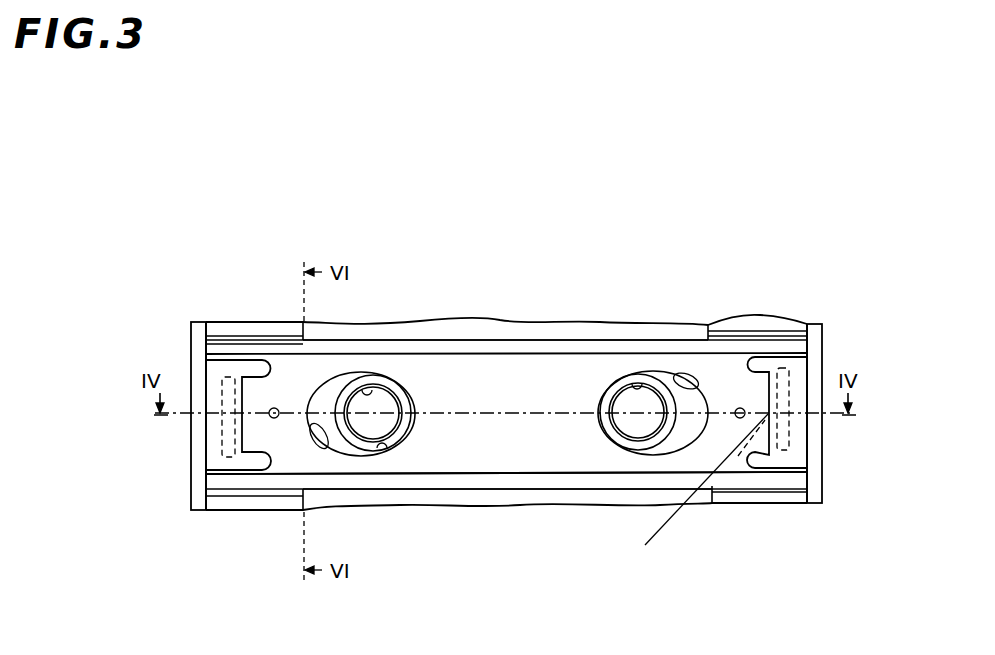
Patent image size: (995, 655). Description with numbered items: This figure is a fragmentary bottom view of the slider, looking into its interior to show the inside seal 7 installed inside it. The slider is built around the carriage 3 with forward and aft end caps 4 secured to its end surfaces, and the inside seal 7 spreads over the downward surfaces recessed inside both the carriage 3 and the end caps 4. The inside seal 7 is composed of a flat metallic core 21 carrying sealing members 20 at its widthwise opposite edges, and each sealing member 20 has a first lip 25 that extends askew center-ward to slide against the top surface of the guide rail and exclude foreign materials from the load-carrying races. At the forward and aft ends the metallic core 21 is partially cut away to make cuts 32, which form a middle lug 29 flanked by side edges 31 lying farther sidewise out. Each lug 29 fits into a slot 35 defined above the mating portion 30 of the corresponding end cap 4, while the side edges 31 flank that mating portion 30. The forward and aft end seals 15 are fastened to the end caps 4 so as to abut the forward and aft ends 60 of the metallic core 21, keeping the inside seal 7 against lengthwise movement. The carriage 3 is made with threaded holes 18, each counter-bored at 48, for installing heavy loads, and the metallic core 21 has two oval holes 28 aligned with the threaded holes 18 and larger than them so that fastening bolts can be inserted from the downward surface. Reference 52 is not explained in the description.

The carriage 3 is at (438, 333).
The end cap 4 is at (251, 332).
The inside seal 7 is at (547, 470).
The end seal 15 is at (193, 487).
The threaded hole 18 is at (375, 392).
The sealing member 20 is at (239, 395).
The metallic core 21 is at (540, 390).
The first lip 25 is at (524, 345).
The oval hole 28 is at (328, 447).
The lug 29 is at (705, 492).
The mating portion 30 is at (212, 395).
The side edge 31 is at (268, 343).
The cut 32 is at (253, 464).
The slot 35 is at (225, 445).
The counterbore 48 is at (388, 450).
The pin hole 52 is at (277, 408).
The forward and aft end 60 is at (205, 488).